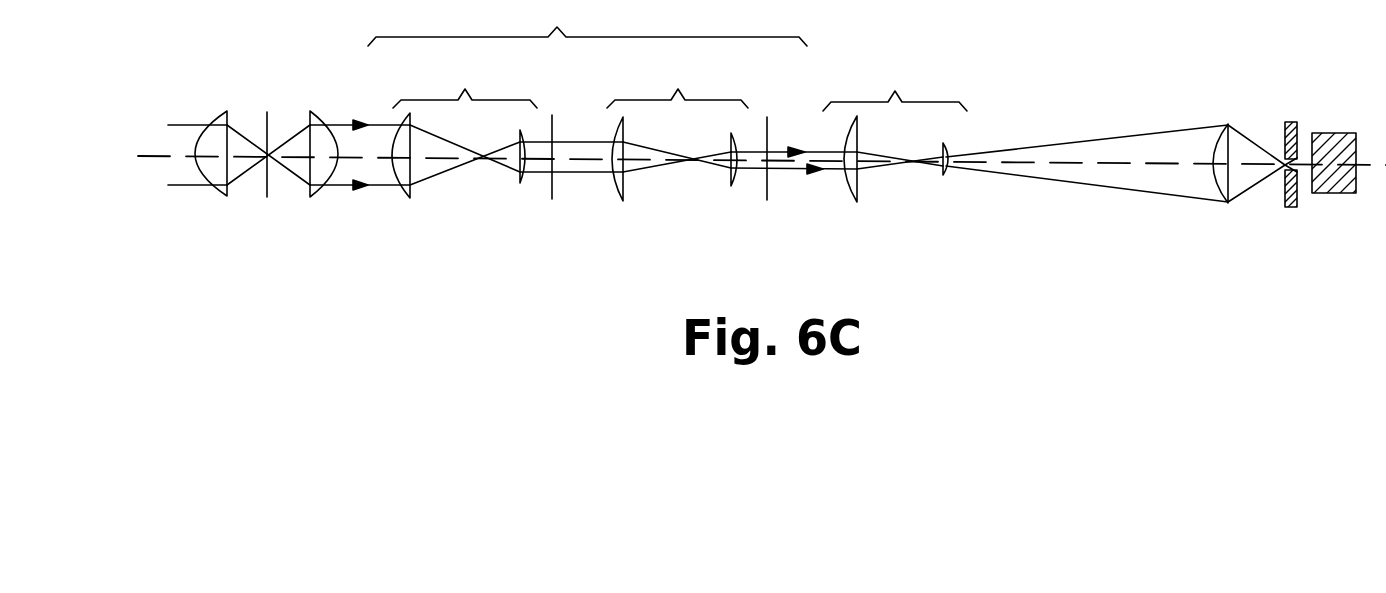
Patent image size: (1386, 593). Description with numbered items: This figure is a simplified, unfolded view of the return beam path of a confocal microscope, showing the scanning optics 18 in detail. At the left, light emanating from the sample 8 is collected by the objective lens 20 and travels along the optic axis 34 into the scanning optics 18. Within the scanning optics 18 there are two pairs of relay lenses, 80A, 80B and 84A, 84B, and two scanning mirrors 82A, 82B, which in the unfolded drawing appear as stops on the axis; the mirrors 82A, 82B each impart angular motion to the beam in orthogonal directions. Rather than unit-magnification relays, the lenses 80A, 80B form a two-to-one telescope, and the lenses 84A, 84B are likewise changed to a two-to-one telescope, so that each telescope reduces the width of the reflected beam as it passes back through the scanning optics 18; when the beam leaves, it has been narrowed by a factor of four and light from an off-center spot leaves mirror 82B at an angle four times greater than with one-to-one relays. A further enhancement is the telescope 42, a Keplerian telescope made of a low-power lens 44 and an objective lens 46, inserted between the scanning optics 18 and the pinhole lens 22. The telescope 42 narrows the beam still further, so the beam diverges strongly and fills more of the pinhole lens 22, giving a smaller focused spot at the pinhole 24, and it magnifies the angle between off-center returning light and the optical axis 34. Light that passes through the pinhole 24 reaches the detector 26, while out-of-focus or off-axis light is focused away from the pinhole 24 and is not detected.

The sample 8 is at (267, 116).
The scanning optics 18 is at (585, 138).
The objective lens 20 is at (226, 112).
The pinhole lens 22 is at (1228, 124).
The pinhole 24 is at (1299, 160).
The detector 26 is at (1320, 133).
The optic axis 34 is at (155, 153).
The optical element 42 is at (909, 161).
The low-power lens 44 is at (861, 198).
The objective lens 46 is at (946, 172).
The relay lens 80A is at (516, 176).
The relay lens 80B is at (402, 197).
The scanning mirror 82A is at (549, 200).
The scanning mirror 82B is at (769, 190).
The relay lens 84A is at (729, 180).
The relay lens 84B is at (615, 200).